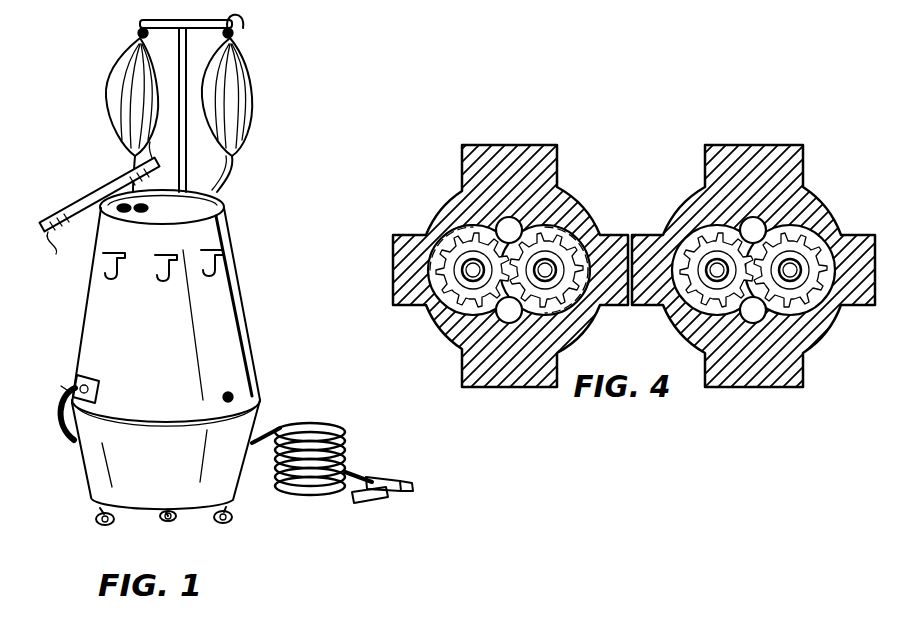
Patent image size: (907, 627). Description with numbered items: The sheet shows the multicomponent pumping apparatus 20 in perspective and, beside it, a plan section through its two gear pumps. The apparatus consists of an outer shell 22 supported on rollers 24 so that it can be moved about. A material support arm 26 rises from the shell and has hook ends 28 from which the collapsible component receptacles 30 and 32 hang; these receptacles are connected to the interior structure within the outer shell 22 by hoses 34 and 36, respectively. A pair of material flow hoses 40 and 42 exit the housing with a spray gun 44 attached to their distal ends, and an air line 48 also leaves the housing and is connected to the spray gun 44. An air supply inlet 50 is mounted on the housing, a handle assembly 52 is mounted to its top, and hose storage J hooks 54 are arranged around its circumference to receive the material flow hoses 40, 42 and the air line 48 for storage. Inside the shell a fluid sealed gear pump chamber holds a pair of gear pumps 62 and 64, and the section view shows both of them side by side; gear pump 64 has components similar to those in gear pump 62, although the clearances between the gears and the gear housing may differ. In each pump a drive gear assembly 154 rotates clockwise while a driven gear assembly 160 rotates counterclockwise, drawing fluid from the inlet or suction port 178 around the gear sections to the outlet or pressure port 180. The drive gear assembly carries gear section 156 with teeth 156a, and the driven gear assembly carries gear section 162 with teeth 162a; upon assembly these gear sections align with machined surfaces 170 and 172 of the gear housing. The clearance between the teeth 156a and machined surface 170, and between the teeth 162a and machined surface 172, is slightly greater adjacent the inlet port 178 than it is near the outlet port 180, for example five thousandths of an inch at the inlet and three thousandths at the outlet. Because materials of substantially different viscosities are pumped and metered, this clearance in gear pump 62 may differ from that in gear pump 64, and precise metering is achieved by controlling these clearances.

In FIG. 1, the multicomponent pumping apparatus 20 is at (293, 200).
In FIG. 1, the outer shell 22 is at (252, 336).
In FIG. 1, the rollers 24 is at (116, 527).
In FIG. 1, the material support arm 26 is at (233, 34).
In FIG. 1, the hook ends 28 is at (138, 34).
In FIG. 1, the collapsible component receptacle 30 is at (108, 92).
In FIG. 1, the collapsible component receptacle 32 is at (250, 92).
In FIG. 1, the hose 34 is at (133, 162).
In FIG. 1, the hose 36 is at (233, 187).
In FIG. 1, the material flow hose 40 is at (74, 380).
In FIG. 1, the material flow hose 42 is at (68, 388).
In FIG. 1, the spray gun 44 is at (388, 478).
In FIG. 1, the air line 48 is at (95, 419).
In FIG. 1, the air supply inlet 50 is at (234, 395).
In FIG. 1, the handle assembly 52 is at (56, 246).
In FIG. 1, the hose storage J hooks 54 is at (165, 282).
In FIG. 4, the gear pump 62 is at (495, 249).
In FIG. 4, the gear pump 64 is at (753, 131).
In FIG. 4, the drive gear assembly 154 is at (428, 228).
In FIG. 4, the gear section 156 is at (497, 235).
In FIG. 4, the teeth 156a is at (476, 181).
In FIG. 4, the driven gear assembly 160 is at (566, 320).
In FIG. 4, the gear section 162 is at (566, 301).
In FIG. 4, the teeth 162a is at (530, 300).
In FIG. 4, the machined surface 170 is at (586, 244).
In FIG. 4, the machined surface 172 is at (445, 250).
In FIG. 4, the inlet or suction port 178 is at (512, 222).
In FIG. 4, the outlet or pressure port 180 is at (517, 298).